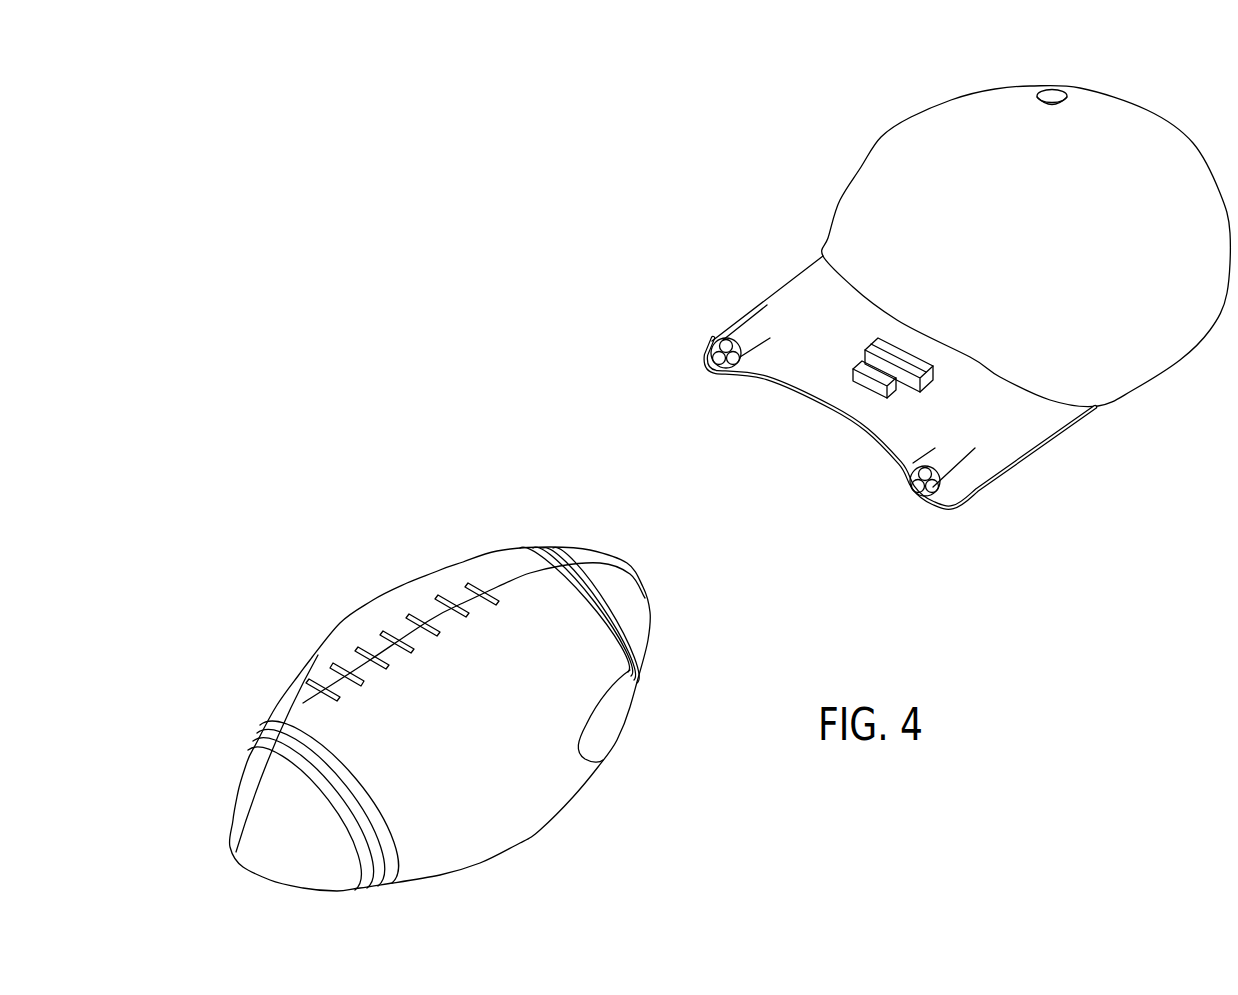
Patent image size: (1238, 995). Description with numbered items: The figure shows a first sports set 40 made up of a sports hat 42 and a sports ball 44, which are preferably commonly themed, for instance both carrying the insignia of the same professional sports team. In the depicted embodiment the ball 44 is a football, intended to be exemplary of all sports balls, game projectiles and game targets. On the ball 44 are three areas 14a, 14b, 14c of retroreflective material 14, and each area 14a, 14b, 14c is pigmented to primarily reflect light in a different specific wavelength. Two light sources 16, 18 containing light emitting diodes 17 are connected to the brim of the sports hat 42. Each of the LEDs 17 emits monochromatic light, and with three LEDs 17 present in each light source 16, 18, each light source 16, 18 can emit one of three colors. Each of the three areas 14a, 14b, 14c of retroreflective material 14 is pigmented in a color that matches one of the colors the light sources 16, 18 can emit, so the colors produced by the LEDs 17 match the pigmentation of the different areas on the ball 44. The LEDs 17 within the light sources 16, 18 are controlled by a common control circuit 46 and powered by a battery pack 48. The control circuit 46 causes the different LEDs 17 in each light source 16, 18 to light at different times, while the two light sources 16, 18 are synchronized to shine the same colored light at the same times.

The retroreflective material 14 is at (320, 740).
The area of retroreflective material 14a is at (620, 603).
The area of retroreflective material 14b is at (640, 677).
The area of retroreflective material 14c is at (603, 760).
The light source 16 is at (755, 333).
The light emitting diodes 17 is at (708, 348).
The light source 18 is at (943, 462).
The sports set 40 is at (551, 332).
The sports hat 42 is at (859, 170).
The sports ball 44 is at (460, 557).
The control circuit 46 is at (865, 383).
The battery pack 48 is at (912, 352).